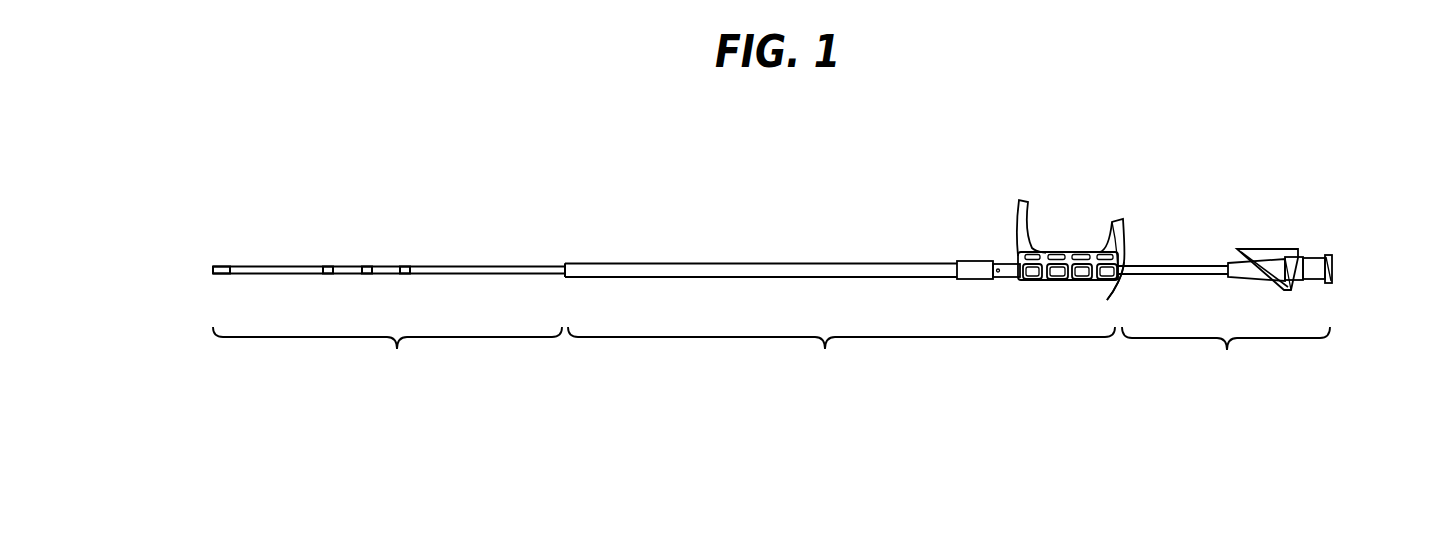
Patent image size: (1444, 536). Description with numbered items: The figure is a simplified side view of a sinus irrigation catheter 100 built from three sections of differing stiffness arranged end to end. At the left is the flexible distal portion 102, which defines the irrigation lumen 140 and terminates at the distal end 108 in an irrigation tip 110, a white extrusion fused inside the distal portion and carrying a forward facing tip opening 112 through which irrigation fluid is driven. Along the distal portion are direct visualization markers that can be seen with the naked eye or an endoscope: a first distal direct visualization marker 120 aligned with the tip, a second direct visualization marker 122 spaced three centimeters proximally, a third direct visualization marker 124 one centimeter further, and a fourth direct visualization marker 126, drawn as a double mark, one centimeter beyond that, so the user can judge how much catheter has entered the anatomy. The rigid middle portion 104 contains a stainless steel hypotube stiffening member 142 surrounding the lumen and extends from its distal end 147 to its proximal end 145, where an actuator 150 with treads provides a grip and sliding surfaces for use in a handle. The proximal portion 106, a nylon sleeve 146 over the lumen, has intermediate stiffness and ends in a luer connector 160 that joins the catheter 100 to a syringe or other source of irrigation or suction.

The irrigation catheter 100 is at (886, 178).
The flexible distal portion 102 is at (387, 353).
The rigid middle portion 104 is at (841, 353).
The proximal portion 106 is at (1226, 354).
The distal end 108 is at (215, 272).
The irrigation tip 110 is at (221, 266).
The forward facing tip opening 112 is at (213, 268).
The first distal direct visualization marker 120 is at (215, 266).
The second direct visualization marker 122 is at (330, 266).
The third direct visualization marker 124 is at (367, 266).
The fourth direct visualization marker 126 is at (407, 266).
The irrigation lumen 140 is at (1332, 272).
The stiffening member 142 is at (718, 263).
The proximal end 145 is at (1118, 280).
The nylon sleeve 146 is at (1166, 276).
The distal end 147 is at (565, 276).
The actuator 150 is at (1047, 248).
The luer connector 160 is at (1295, 250).